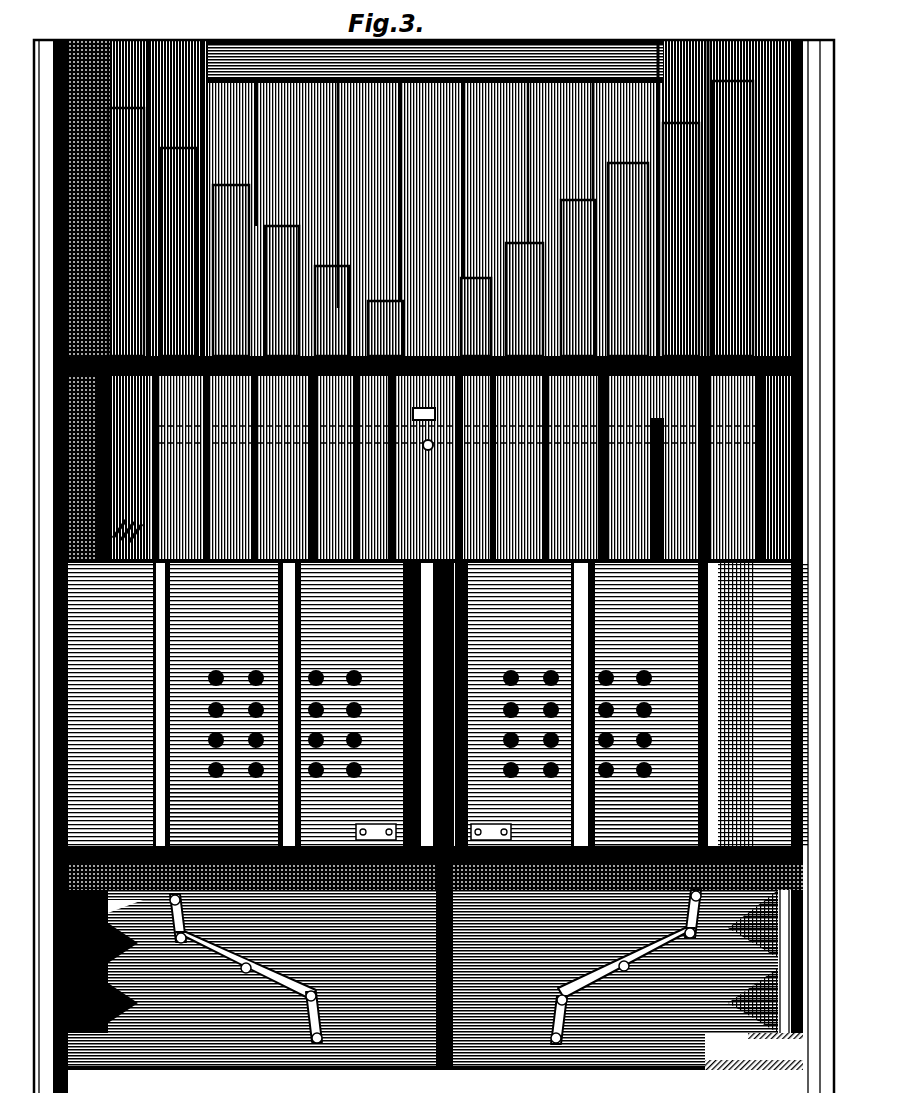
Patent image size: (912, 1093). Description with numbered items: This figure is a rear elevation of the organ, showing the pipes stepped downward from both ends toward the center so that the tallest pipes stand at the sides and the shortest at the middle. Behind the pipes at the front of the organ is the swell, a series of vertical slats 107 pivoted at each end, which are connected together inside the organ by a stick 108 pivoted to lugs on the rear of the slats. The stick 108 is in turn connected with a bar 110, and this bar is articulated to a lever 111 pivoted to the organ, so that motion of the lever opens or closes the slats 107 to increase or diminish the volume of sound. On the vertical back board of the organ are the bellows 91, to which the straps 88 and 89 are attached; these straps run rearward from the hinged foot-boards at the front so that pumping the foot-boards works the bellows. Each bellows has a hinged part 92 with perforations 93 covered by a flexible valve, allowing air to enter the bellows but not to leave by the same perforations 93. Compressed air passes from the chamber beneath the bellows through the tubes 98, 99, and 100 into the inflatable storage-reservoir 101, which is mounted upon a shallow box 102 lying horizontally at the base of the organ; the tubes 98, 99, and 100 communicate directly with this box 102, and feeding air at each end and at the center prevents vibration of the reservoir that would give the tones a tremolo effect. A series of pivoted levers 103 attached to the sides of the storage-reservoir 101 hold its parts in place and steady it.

The vertical slats 107 is at (433, 198).
The stick 108 is at (432, 423).
The bar 110 is at (448, 468).
The lever 111 is at (129, 468).
The bellows 91 is at (433, 704).
The hinged part 92 is at (433, 814).
The perforations 93 is at (206, 680).
The strap 89 is at (348, 826).
The strap 88 is at (505, 832).
The tube 99 is at (428, 942).
The tube 100 is at (100, 945).
The inflatable storage-reservoir 101 is at (580, 961).
The tube 98 is at (741, 961).
The shallow box 102 is at (435, 980).
The pivoted levers 103 is at (175, 920).